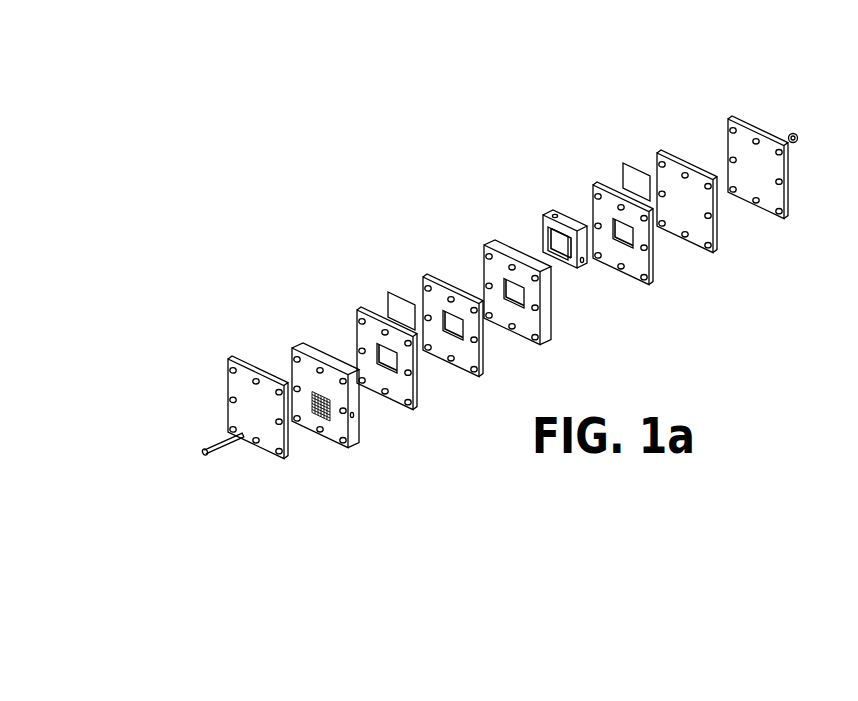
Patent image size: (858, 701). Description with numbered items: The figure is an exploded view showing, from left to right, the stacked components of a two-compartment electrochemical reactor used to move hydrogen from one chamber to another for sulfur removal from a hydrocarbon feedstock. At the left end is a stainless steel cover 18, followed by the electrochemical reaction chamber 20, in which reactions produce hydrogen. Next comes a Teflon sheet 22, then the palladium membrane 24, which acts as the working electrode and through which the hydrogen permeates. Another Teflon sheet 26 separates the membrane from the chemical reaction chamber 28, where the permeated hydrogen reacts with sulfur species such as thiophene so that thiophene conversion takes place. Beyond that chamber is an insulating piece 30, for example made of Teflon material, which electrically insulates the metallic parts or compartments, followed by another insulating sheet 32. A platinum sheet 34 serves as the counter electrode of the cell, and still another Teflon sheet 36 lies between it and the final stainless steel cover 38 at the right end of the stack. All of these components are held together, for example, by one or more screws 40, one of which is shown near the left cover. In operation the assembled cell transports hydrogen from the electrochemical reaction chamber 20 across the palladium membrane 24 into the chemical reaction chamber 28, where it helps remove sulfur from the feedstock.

The stainless steel cover 18 is at (226, 385).
The electrochemical reaction chamber 20 is at (312, 353).
The Teflon sheet 22 is at (365, 307).
The palladium membrane 24 is at (393, 300).
The Teflon sheet 26 is at (438, 288).
The chemical reaction chamber 28 is at (494, 241).
The insulating piece 30 is at (553, 214).
The insulating sheet 32 is at (597, 192).
The platinum sheet 34 is at (629, 168).
The Teflon sheet 36 is at (693, 187).
The stainless steel cover 38 is at (768, 145).
The screw 40 is at (224, 452).